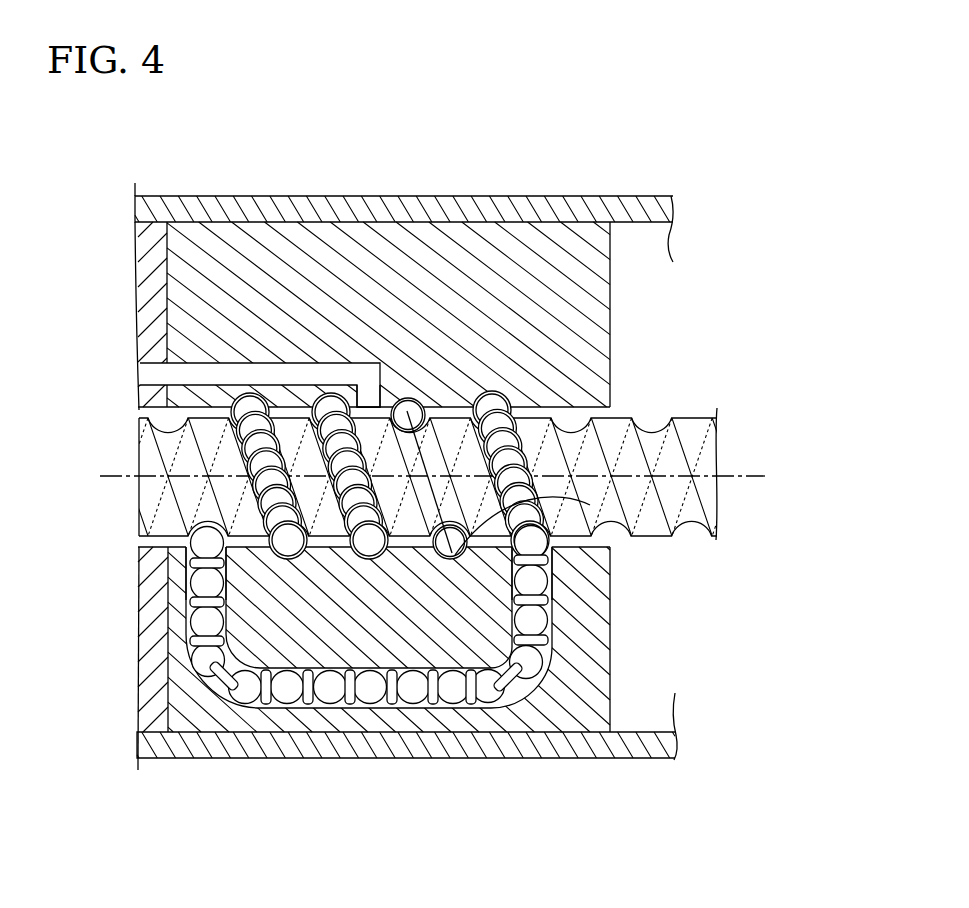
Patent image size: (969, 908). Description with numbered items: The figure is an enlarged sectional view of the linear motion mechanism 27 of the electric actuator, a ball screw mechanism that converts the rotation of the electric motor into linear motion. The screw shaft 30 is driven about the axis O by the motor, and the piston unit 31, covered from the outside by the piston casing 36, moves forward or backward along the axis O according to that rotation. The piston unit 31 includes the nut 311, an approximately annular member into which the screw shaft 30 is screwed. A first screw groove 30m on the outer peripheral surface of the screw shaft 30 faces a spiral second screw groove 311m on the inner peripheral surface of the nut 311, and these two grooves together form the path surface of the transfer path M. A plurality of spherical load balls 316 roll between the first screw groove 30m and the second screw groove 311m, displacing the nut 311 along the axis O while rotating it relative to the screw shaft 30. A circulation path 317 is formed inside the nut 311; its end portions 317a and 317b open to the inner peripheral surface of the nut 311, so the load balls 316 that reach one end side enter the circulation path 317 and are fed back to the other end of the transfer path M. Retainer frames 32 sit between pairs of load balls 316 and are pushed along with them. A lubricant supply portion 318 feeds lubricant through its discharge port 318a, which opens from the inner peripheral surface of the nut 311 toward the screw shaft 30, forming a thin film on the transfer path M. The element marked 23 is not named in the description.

The housing 23 is at (406, 431).
The linear motion mechanism 27 is at (410, 471).
The screw shaft 30 is at (445, 455).
The first screw groove 30m is at (693, 523).
The piston unit 31 is at (431, 431).
The nut 311 is at (603, 679).
The second screw groove 311m is at (587, 508).
The load balls 316 is at (415, 403).
The circulation path 317 is at (385, 704).
The end portion of the circulation path 317a is at (230, 553).
The end portion of the circulation path 317b is at (527, 563).
The lubricant supply portion 318 is at (260, 268).
The discharge port 318a is at (360, 412).
The retainer frames 32 is at (207, 602).
The piston casing 36 is at (388, 206).
The transfer path M is at (430, 412).
The axis O is at (742, 474).